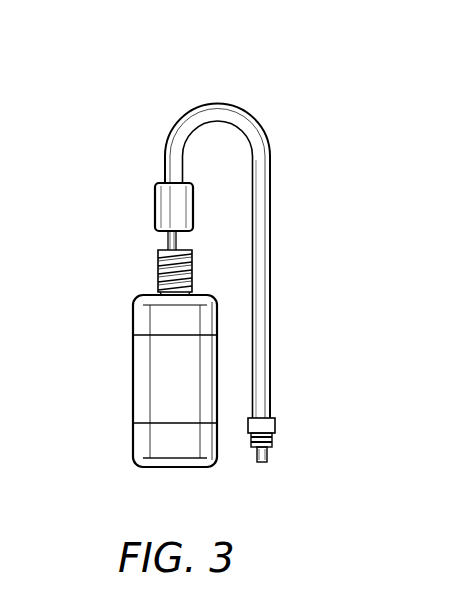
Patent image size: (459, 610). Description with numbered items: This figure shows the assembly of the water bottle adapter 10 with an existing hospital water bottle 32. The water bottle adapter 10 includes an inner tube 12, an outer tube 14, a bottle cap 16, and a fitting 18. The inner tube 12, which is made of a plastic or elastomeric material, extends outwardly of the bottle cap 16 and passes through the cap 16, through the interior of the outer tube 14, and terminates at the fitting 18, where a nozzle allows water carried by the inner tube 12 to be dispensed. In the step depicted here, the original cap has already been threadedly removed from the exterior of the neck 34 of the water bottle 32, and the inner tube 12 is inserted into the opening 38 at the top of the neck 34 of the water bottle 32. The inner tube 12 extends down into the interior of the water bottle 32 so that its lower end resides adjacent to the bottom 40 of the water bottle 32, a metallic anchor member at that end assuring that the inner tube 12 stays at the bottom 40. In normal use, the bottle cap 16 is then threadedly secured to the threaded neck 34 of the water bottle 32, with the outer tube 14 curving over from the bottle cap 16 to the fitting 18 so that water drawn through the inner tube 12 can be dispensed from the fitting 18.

The water bottle adapter 10 is at (303, 179).
The inner tube 12 is at (178, 244).
The outer tube 14 is at (268, 300).
The bottle cap 16 is at (156, 205).
The fitting 18 is at (275, 431).
The water bottle 32 is at (133, 378).
The neck 34 is at (158, 264).
The opening 38 is at (168, 246).
The bottom 40 is at (163, 468).